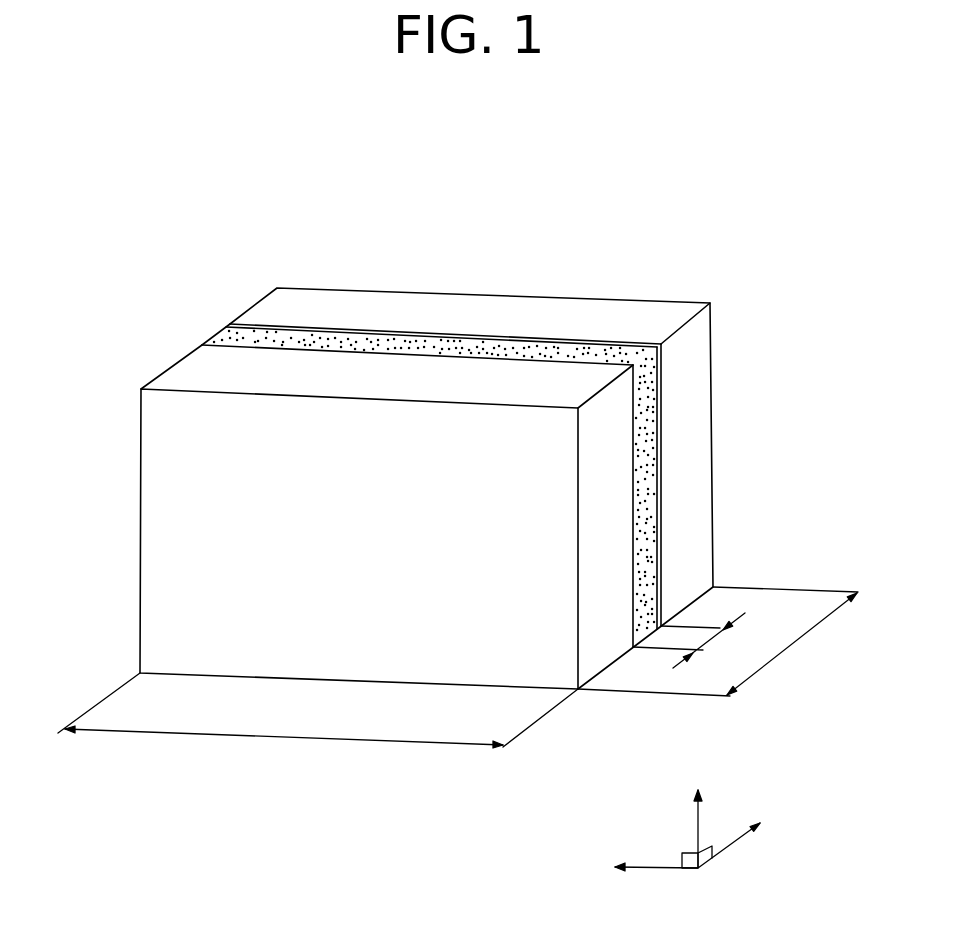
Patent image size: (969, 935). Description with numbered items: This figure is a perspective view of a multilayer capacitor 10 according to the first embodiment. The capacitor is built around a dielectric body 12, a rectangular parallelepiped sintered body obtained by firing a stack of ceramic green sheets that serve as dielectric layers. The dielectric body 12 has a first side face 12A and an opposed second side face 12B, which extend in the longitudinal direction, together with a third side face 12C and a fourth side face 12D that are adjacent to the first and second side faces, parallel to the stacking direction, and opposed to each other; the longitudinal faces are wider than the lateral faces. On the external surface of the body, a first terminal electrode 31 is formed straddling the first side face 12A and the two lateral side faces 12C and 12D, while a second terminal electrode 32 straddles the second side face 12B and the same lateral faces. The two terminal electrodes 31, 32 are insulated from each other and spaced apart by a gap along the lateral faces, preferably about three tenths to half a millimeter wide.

The multilayer capacitor 10 is at (497, 228).
The dielectric body 12 is at (564, 337).
The first side face 12A is at (400, 290).
The second side face 12B is at (232, 540).
The third side face 12C is at (650, 455).
The fourth side face 12D is at (209, 338).
The first terminal electrode 31 is at (664, 298).
The second terminal electrode 32 is at (237, 463).